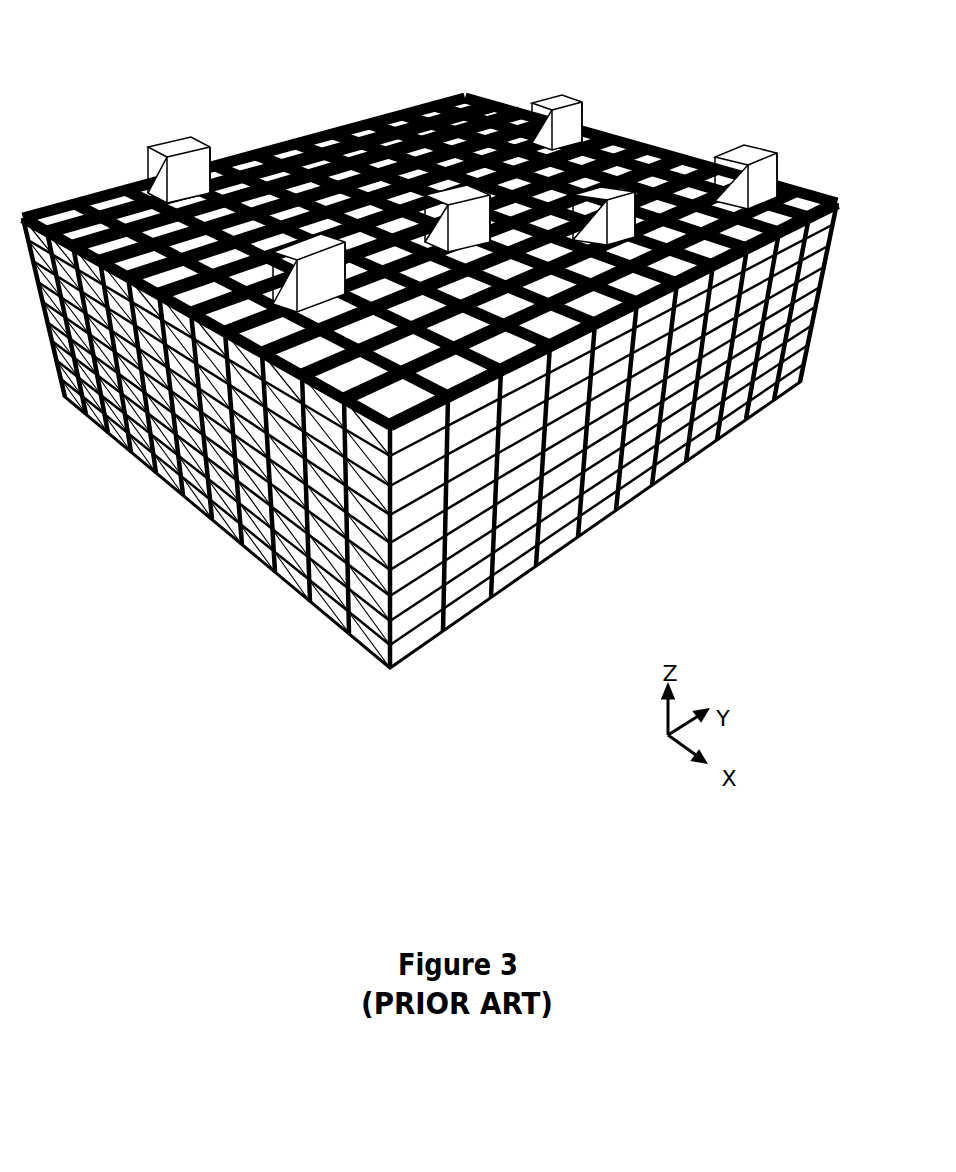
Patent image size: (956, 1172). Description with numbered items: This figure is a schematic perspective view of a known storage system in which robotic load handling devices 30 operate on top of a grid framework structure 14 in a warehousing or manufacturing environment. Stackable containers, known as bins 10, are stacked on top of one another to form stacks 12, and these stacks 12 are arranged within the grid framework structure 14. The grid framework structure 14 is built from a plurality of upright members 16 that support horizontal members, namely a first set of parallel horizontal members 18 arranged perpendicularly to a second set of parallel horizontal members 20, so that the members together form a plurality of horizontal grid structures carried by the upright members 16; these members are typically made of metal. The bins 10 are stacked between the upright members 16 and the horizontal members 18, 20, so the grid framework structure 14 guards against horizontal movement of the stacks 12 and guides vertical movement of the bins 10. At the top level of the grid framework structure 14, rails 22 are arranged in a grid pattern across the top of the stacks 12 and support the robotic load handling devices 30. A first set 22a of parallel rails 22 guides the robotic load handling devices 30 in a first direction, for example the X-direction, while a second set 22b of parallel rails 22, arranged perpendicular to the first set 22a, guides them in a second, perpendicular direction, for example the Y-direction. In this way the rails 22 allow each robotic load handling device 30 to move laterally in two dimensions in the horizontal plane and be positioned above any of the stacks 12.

The bin 10 is at (436, 381).
The stack 12 is at (697, 435).
The grid framework structure 14 is at (806, 200).
The upright member 16 is at (315, 563).
The first set of parallel horizontal members 18 is at (515, 478).
The second set of parallel horizontal members 20 is at (238, 452).
The rail 22 is at (108, 214).
The first set of parallel rails 22a is at (236, 320).
The second set of parallel rails 22b is at (308, 200).
The robotic load handling device 30 is at (576, 120).